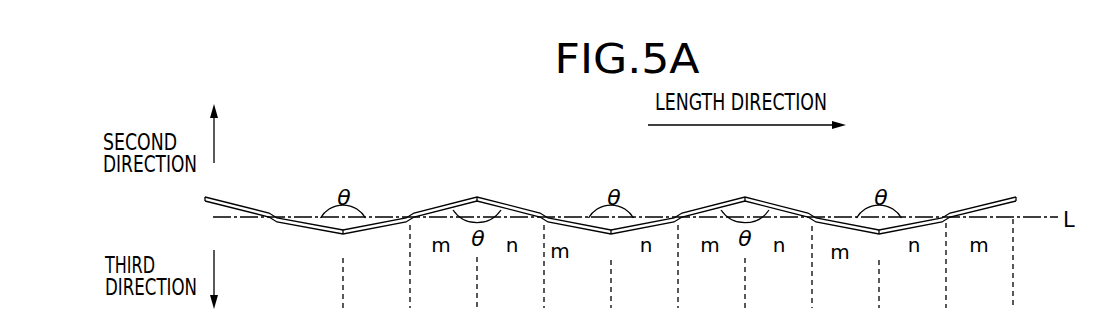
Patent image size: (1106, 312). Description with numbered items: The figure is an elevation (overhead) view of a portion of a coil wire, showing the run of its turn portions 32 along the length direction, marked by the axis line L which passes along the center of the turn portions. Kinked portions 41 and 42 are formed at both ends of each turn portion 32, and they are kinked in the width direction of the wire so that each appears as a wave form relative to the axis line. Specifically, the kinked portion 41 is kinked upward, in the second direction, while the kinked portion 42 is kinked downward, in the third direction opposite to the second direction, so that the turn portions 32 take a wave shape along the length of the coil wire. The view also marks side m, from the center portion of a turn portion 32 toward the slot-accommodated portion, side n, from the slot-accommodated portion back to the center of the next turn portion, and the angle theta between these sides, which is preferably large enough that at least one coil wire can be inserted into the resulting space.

The turn portion 32 is at (443, 204).
The kinked portion 41 is at (343, 238).
The kinked portion 42 is at (478, 195).